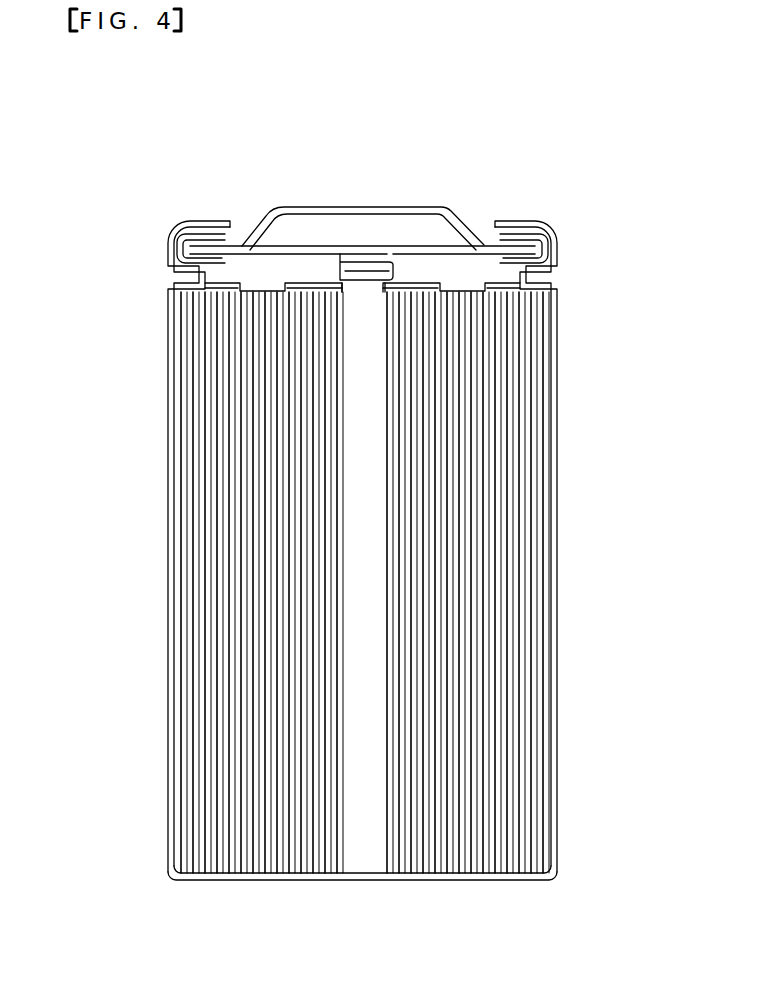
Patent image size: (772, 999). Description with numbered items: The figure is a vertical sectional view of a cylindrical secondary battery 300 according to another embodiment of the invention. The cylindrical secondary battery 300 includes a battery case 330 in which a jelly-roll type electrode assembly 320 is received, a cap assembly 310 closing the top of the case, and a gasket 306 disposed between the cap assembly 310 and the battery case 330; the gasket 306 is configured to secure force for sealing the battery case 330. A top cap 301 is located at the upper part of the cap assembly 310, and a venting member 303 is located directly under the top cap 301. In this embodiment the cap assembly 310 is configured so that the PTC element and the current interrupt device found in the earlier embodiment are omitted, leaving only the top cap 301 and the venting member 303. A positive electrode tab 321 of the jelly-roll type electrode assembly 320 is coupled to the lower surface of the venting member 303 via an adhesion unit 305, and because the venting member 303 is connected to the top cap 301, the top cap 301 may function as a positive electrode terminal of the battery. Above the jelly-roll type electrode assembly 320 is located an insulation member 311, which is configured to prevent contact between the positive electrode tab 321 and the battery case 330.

The cylindrical secondary battery 300 is at (190, 146).
The top cap 301 is at (480, 217).
The venting member 303 is at (560, 258).
The adhesion unit 305 is at (365, 247).
The gasket 306 is at (167, 244).
The cap assembly 310 is at (452, 234).
The insulation member 311 is at (557, 288).
The jelly-roll type electrode assembly 320 is at (512, 637).
The positive electrode tab 321 is at (337, 290).
The battery case 330 is at (557, 682).